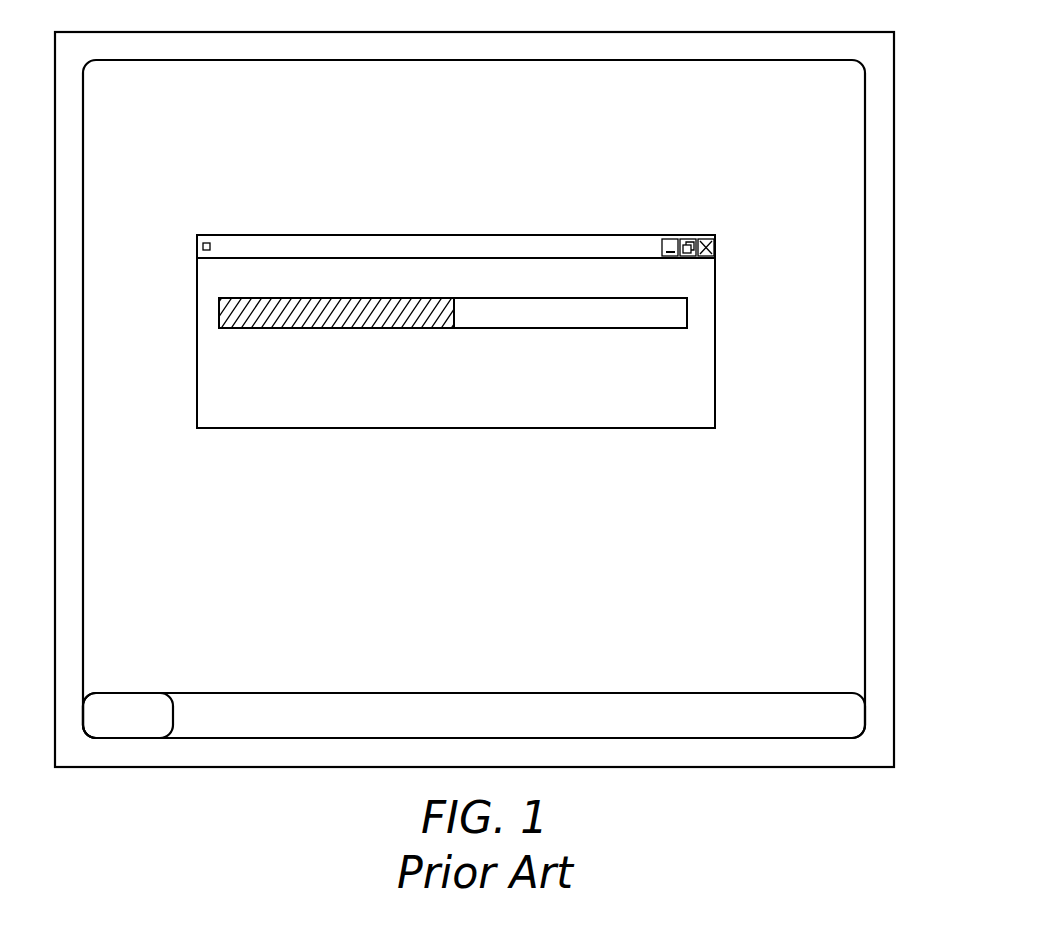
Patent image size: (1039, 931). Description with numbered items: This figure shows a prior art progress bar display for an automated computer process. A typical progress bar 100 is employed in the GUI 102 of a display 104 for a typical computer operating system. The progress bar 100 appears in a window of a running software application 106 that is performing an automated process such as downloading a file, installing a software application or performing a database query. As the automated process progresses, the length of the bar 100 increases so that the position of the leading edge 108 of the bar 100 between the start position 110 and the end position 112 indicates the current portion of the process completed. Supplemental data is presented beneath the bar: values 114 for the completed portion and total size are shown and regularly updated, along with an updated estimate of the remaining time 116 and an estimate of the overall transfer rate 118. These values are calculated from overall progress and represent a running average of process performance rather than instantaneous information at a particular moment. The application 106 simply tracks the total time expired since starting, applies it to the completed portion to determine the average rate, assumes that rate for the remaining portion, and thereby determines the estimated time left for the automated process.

The progress bar 100 is at (366, 288).
The GUI 102 is at (865, 222).
The display 104 is at (894, 67).
The running software application 106 is at (237, 234).
The leading edge 108 is at (461, 298).
The start position 110 is at (219, 312).
The end position 112 is at (687, 313).
The values 114 is at (725, 358).
The estimate of the remaining time 116 is at (454, 371).
The estimate of the overall transfer rate 118 is at (438, 424).